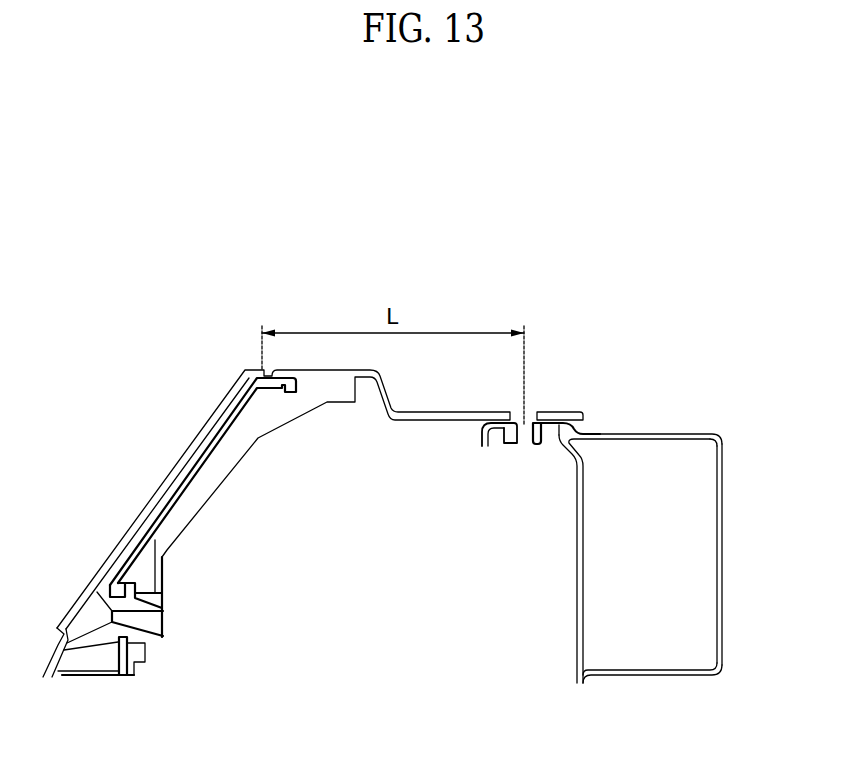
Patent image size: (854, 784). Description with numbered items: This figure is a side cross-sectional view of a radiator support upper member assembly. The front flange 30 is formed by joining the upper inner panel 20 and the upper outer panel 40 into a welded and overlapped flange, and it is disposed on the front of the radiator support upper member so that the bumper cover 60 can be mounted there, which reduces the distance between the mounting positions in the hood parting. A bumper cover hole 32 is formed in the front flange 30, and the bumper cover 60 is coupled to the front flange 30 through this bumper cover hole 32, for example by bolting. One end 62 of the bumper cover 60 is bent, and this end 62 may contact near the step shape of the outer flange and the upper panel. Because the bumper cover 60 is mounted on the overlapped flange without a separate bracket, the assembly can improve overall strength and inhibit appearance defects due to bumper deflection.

The upper inner panel 20 is at (565, 583).
The front flange 30 is at (495, 452).
The bumper cover hole 32 is at (541, 395).
The upper outer panel 40 is at (737, 537).
The bumper cover 60 is at (158, 454).
The end of the bumper cover 62 is at (584, 417).